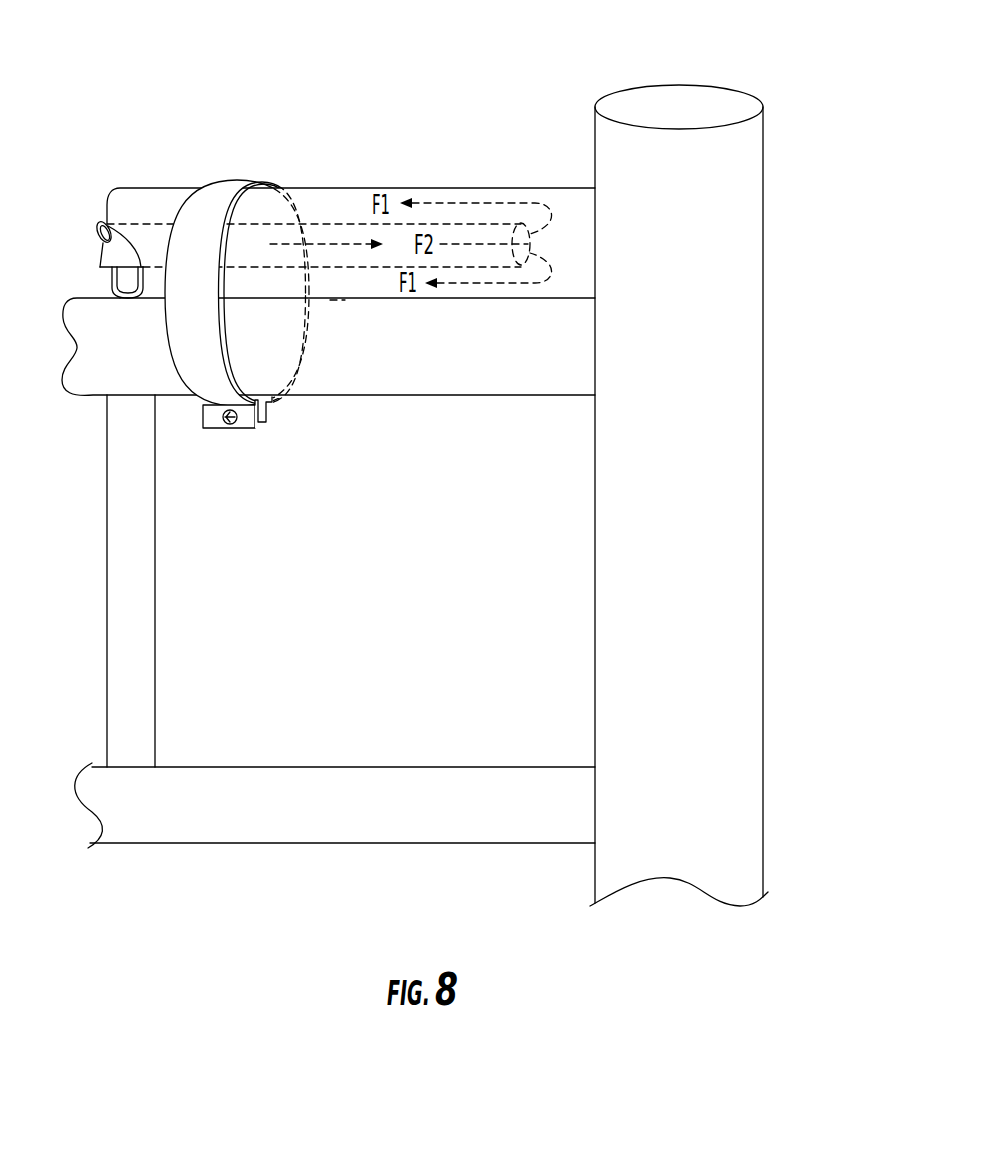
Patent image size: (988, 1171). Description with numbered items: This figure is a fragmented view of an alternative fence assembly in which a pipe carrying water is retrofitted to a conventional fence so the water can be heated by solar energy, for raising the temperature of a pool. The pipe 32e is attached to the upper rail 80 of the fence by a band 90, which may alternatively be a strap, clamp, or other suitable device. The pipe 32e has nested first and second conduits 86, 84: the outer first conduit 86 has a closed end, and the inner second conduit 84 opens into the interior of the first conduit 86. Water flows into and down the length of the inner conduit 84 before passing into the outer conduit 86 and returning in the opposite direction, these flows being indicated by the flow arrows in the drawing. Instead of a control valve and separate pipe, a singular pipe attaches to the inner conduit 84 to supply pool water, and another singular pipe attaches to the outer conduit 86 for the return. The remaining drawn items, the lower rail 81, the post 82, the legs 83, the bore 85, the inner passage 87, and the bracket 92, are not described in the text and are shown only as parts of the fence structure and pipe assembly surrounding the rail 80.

The pipe 32e is at (154, 186).
The upper rail 80 is at (432, 395).
The bottom rail tube 81 is at (378, 843).
The post 82 is at (607, 92).
The legs 83 is at (155, 619).
The second conduit 84 is at (325, 265).
The bore 85 is at (348, 258).
The first conduit 86 is at (318, 185).
The inner passage 87 is at (350, 205).
The band 90 is at (173, 350).
The screw bracket 92 is at (223, 418).